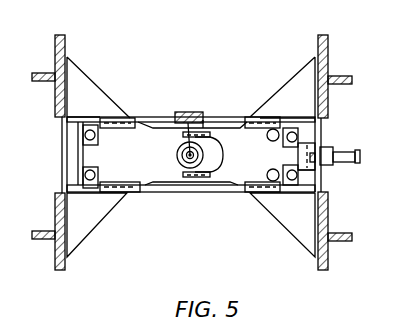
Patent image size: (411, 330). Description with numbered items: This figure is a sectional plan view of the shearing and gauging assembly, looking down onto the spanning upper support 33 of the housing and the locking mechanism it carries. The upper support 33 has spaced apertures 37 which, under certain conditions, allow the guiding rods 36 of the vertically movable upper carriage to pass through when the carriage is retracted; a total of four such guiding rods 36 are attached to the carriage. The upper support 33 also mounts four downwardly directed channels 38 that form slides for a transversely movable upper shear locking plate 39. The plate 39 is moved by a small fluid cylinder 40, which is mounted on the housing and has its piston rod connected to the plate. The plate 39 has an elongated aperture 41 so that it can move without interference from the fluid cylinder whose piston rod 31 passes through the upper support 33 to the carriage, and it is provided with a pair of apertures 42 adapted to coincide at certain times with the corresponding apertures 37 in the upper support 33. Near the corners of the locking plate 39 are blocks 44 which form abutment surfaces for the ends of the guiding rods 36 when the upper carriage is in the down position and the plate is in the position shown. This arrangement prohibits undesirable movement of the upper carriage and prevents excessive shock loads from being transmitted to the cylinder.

The upper support 33 is at (72, 142).
The guiding rods 36 is at (95, 195).
The spaced apertures 37 is at (114, 100).
The downwardly directed channels 38 is at (133, 117).
The piston rod 31 is at (188, 112).
The upper shear locking plate 39 is at (185, 178).
The elongated aperture 41 is at (222, 157).
The apertures 42 is at (274, 129).
The small fluid cylinder 40 is at (345, 160).
The blocks 44 is at (302, 172).